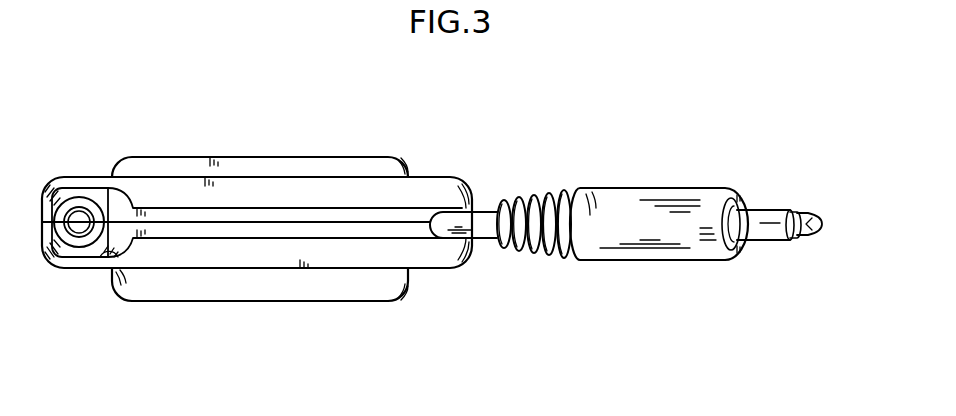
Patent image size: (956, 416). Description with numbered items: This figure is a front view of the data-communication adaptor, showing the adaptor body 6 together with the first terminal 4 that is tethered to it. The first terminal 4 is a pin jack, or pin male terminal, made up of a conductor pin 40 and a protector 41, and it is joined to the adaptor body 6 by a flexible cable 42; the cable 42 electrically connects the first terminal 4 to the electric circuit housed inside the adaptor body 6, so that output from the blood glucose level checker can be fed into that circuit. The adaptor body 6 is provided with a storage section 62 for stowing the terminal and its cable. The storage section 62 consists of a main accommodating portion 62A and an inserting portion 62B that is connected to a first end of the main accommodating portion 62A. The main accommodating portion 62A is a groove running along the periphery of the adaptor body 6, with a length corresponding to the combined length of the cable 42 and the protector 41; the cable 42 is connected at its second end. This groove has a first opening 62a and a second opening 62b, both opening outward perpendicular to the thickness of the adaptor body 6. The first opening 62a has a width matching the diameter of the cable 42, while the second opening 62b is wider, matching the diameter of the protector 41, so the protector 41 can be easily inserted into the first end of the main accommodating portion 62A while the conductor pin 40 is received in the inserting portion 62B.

The first terminal 4 is at (643, 185).
The conductor pin 40 is at (768, 240).
The protector 41 is at (677, 248).
The flexible cable 42 is at (488, 229).
The adaptor body 6 is at (209, 152).
The storage section 62 is at (310, 219).
The main accommodating portion 62A is at (165, 230).
The first opening 62a is at (278, 238).
The inserting portion 62B is at (82, 212).
The second opening 62b is at (107, 249).